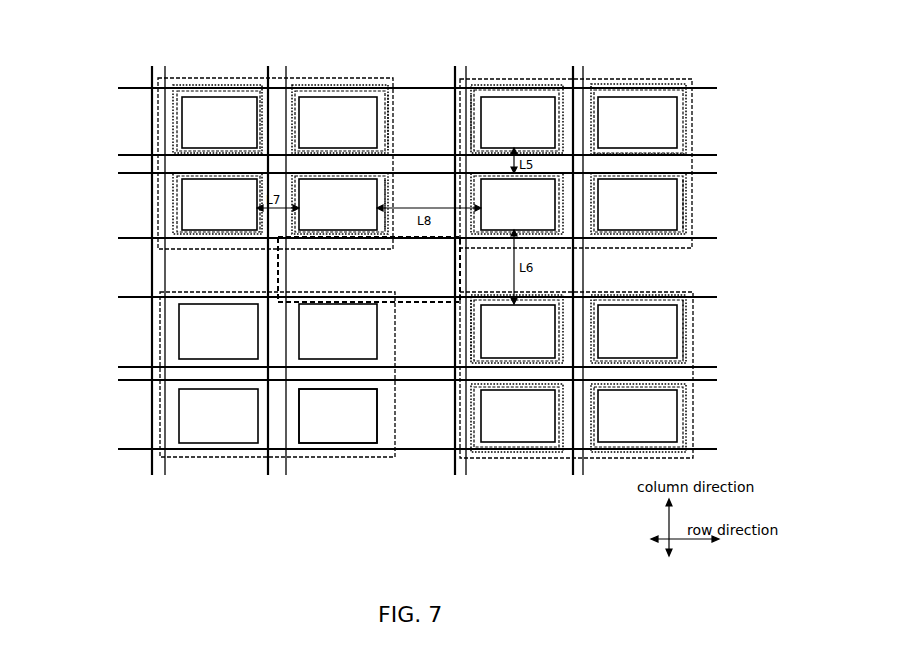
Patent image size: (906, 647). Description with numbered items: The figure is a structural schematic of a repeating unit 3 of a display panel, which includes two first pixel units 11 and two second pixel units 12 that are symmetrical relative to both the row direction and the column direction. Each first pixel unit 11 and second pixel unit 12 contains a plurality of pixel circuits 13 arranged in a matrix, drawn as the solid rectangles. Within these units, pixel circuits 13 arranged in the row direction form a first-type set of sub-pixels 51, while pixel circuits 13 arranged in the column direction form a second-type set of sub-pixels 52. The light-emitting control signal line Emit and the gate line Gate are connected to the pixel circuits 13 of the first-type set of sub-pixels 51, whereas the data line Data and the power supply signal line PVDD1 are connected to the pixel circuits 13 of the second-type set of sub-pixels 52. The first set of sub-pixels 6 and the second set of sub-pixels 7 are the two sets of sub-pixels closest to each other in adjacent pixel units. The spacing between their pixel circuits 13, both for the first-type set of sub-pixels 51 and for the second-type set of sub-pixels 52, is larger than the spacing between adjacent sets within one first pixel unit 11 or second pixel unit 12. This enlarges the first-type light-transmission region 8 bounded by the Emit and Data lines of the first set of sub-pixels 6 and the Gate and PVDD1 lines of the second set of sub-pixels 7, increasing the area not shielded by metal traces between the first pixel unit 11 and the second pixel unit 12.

The repeating unit 3 is at (66, 42).
The first set of sub-pixels 6 is at (389, 114).
The second set of sub-pixels 7 is at (470, 121).
The first-type light-transmission region 8 is at (278, 271).
The first pixel unit 11 is at (322, 78).
The second pixel unit 12 is at (652, 79).
The pixel circuit 13 is at (338, 458).
The first-type set of sub-pixels 51 is at (177, 143).
The second-type set of sub-pixels 52 is at (172, 116).